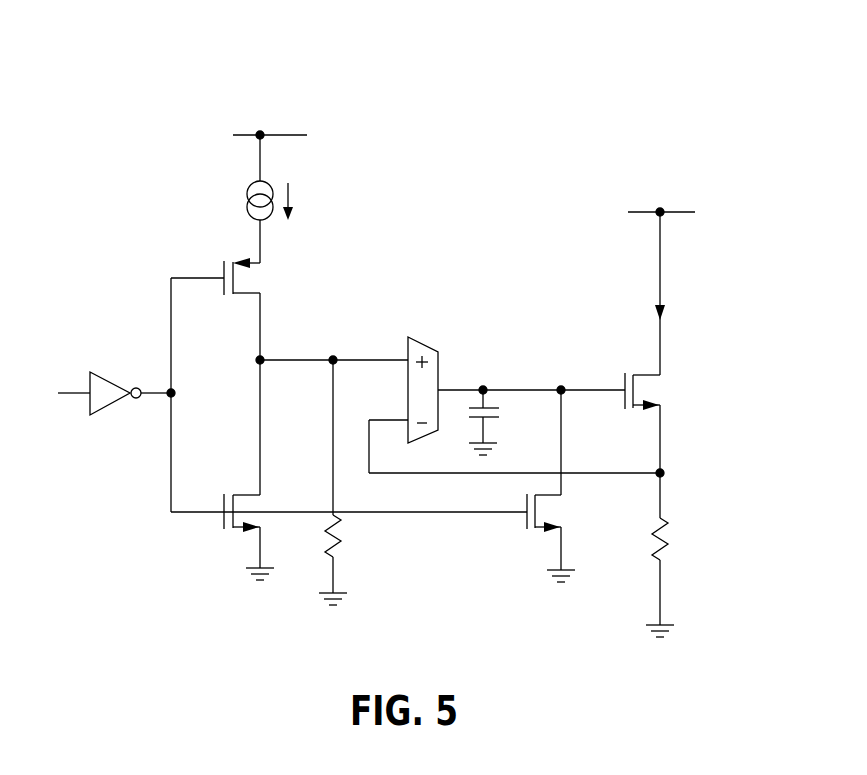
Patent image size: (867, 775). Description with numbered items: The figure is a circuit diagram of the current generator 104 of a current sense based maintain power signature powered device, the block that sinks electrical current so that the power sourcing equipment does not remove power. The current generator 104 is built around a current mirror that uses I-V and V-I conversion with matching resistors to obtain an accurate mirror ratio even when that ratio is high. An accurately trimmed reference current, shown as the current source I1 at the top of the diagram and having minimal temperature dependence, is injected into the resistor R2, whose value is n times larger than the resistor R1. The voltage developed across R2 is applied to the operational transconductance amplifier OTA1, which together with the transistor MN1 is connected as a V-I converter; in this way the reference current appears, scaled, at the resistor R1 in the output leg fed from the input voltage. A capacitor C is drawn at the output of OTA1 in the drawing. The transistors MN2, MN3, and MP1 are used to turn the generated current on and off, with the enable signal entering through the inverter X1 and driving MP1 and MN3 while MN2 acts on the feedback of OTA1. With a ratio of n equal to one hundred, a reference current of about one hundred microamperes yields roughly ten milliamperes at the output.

The current generator 104 is at (668, 84).
The current source I1 is at (275, 197).
The element MP1 is at (248, 275).
The inverter X1 is at (91, 379).
The element R2 is at (345, 482).
The element MN3 is at (237, 537).
The element MN2 is at (537, 486).
The operational transconductance amplifier OTA1 is at (516, 396).
The capacitor C is at (494, 422).
The element MN1 is at (630, 445).
The element R1 is at (676, 577).